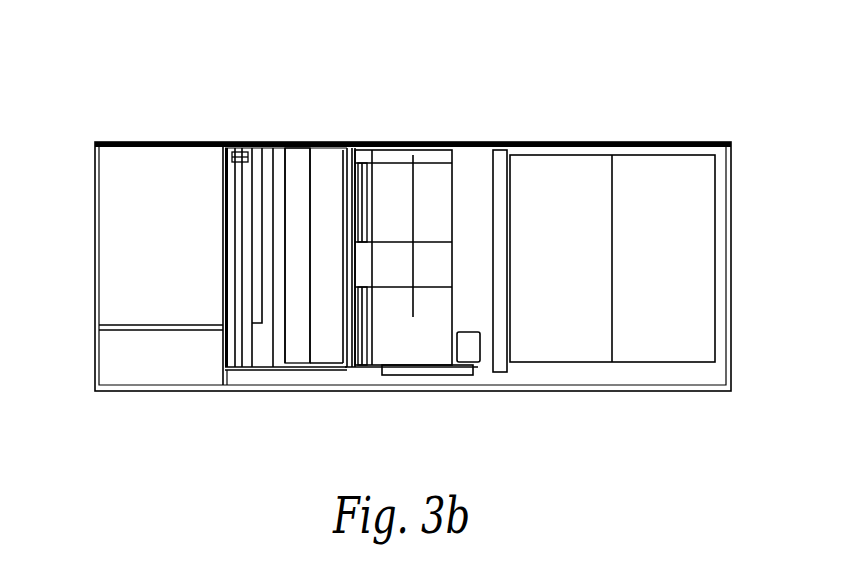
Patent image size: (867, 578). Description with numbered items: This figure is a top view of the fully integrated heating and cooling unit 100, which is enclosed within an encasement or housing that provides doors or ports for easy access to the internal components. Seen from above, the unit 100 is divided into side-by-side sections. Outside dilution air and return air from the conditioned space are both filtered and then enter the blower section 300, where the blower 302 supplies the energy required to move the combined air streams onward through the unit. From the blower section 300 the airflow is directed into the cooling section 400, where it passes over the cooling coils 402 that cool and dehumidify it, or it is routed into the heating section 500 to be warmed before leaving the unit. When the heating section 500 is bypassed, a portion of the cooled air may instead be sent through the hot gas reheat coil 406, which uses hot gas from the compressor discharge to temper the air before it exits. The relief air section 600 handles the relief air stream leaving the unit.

The heating and cooling unit 100 is at (76, 105).
The blower section 300 is at (450, 142).
The blower 302 is at (440, 366).
The cooling section 400 is at (340, 142).
The cooling coils 402 is at (330, 363).
The hot gas reheat coil 406 is at (243, 150).
The heating section 500 is at (178, 143).
The relief air section 600 is at (725, 143).